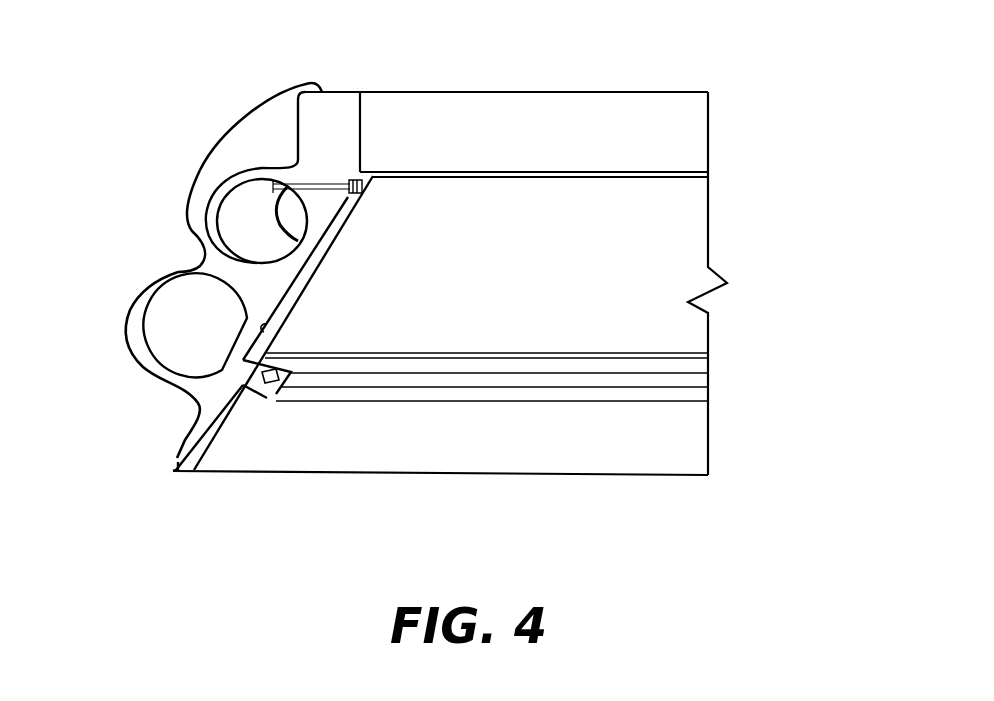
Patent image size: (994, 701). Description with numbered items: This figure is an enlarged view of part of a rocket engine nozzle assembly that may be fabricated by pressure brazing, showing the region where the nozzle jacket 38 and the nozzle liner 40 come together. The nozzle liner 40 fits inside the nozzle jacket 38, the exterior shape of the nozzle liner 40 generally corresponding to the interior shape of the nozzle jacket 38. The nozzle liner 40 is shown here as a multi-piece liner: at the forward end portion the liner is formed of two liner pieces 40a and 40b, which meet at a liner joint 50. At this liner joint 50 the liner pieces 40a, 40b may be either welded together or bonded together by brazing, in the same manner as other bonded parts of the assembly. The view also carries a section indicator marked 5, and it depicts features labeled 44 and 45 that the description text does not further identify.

The nozzle jacket 38 is at (620, 92).
The nozzle liner 40 is at (673, 227).
The liner piece 40a is at (303, 85).
The liner piece 40b is at (211, 440).
The upper tubular channel 44 is at (228, 210).
The lower tubular channel 45 is at (167, 313).
The liner joint 50 is at (275, 396).
The section line 5- 5 is at (280, 152).